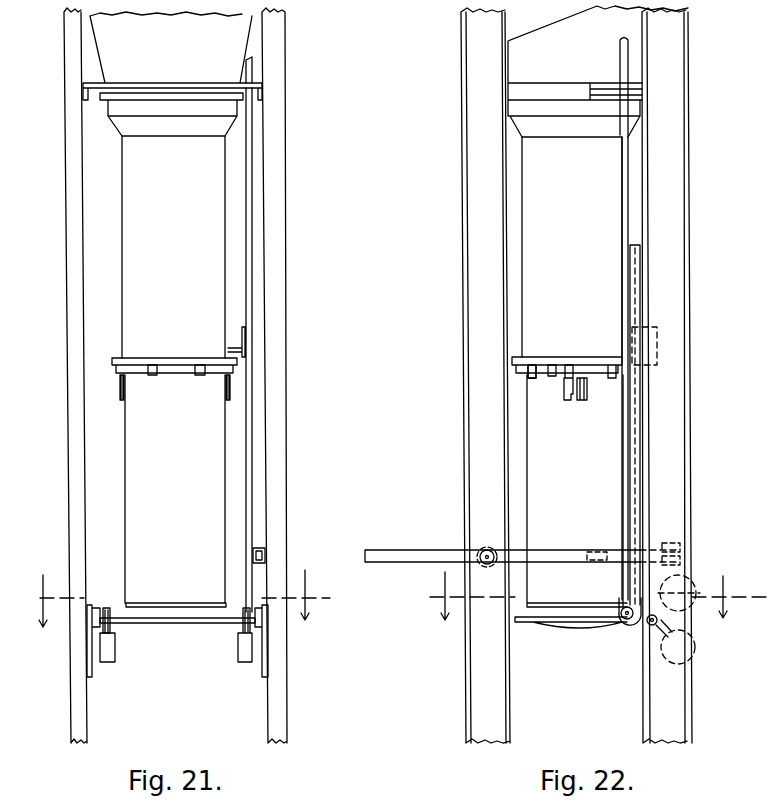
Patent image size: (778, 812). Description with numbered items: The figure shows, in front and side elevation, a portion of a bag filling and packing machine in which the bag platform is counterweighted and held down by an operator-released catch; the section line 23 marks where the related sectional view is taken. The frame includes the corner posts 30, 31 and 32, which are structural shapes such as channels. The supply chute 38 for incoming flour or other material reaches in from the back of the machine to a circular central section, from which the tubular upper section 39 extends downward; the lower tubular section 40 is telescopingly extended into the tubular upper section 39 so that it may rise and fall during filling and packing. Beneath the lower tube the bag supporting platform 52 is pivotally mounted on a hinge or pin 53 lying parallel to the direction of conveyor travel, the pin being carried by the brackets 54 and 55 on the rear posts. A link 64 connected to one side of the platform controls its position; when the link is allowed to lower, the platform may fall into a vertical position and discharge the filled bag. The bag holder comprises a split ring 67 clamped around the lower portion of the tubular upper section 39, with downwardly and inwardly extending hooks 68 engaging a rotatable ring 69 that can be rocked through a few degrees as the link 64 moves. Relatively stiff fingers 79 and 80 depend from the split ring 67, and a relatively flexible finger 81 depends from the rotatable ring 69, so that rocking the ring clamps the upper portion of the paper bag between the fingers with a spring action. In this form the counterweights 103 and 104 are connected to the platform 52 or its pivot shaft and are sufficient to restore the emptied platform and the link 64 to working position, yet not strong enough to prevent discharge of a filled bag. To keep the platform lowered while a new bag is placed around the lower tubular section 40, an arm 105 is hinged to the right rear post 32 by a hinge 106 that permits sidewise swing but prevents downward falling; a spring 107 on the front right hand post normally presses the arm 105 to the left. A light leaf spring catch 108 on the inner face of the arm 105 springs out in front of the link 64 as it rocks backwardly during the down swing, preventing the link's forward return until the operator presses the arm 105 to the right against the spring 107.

In FIG. 21, the corner post 30 is at (64, 376).
In FIG. 21, the corner post 31 is at (275, 381).
In FIG. 22, the corner post 31 is at (478, 419).
In FIG. 22, the right rear post 32 is at (668, 446).
In FIG. 21, the supply chute 38 is at (172, 74).
In FIG. 22, the supply chute 38 is at (598, 71).
In FIG. 21, the tubular upper section 39 is at (207, 243).
In FIG. 22, the tubular upper section 39 is at (583, 233).
In FIG. 21, the lower tubular section 40 is at (210, 471).
In FIG. 22, the lower tubular section 40 is at (590, 494).
In FIG. 21, the bag supporting platform 52 is at (180, 622).
In FIG. 22, the bag supporting platform 52 is at (560, 630).
In FIG. 21, the hinge or pin 53 is at (103, 630).
In FIG. 22, the hinge or pin 53 is at (645, 632).
In FIG. 21, the bracket 54 is at (256, 676).
In FIG. 22, the bracket 54 is at (636, 627).
In FIG. 21, the bracket 55 is at (93, 677).
In FIG. 21, the link 64 is at (253, 432).
In FIG. 22, the link 64 is at (623, 446).
In FIG. 21, the split ring 67 is at (172, 350).
In FIG. 22, the split ring 67 is at (563, 348).
In FIG. 21, the hooks 68 is at (154, 376).
In FIG. 22, the hooks 68 is at (530, 374).
In FIG. 21, the rotatable ring 69 is at (178, 376).
In FIG. 22, the rotatable ring 69 is at (552, 377).
In FIG. 21, the stiff finger 79 is at (231, 401).
In FIG. 22, the stiff finger 79 is at (588, 400).
In FIG. 21, the stiff finger 80 is at (121, 403).
In FIG. 22, the flexible finger 81 is at (567, 397).
In FIG. 21, the counterweight 103 is at (240, 653).
In FIG. 22, the counterweight 103 is at (695, 651).
In FIG. 21, the counterweight 104 is at (116, 662).
In FIG. 21, the arm 105 is at (263, 557).
In FIG. 22, the arm 105 is at (428, 540).
In FIG. 21, the hinge 106 is at (258, 548).
In FIG. 22, the hinge 106 is at (683, 554).
In FIG. 22, the spring 107 is at (480, 548).
In FIG. 22, the leaf spring catch 108 is at (614, 549).
In FIG. 21, the section line 23 is at (172, 598).
In FIG. 22, the section line 23 is at (591, 596).